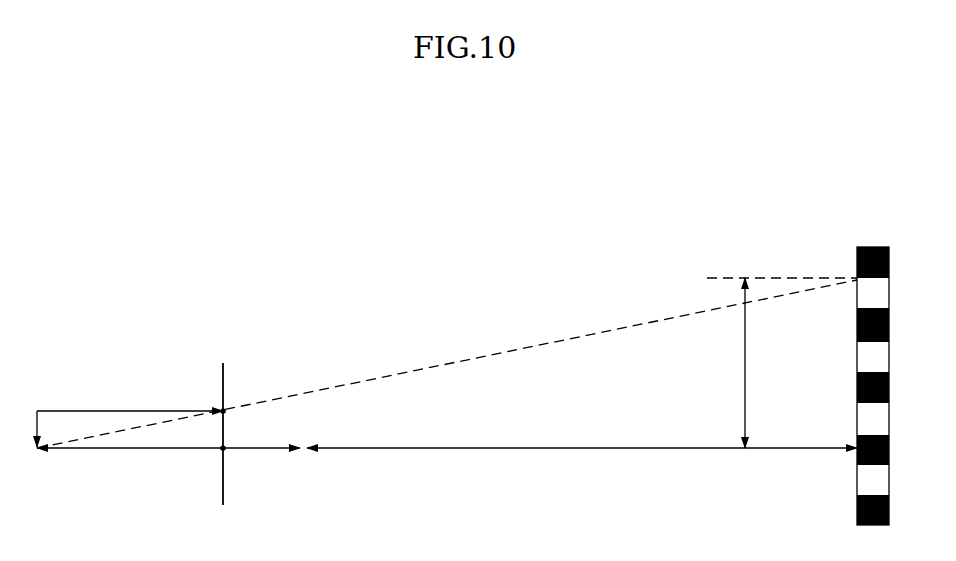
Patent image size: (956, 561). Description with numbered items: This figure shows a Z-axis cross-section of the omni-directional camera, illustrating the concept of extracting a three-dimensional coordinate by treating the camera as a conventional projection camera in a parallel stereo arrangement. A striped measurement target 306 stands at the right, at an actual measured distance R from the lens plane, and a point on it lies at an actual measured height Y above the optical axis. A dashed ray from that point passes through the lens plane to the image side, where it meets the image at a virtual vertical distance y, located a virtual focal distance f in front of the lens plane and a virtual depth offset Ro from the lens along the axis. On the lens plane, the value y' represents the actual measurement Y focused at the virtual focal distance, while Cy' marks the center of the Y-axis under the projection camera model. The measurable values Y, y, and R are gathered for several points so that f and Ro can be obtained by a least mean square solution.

The target chart 306 is at (890, 295).
The virtual depth offset Ro is at (168, 460).
The actual measured distance R is at (582, 460).
The virtual focal distance f is at (130, 399).
The virtual vertical distance y is at (27, 429).
The actual measurement value Y is at (735, 363).
The focused value of Y y' is at (265, 419).
The center of Y-axis Cy' is at (271, 468).